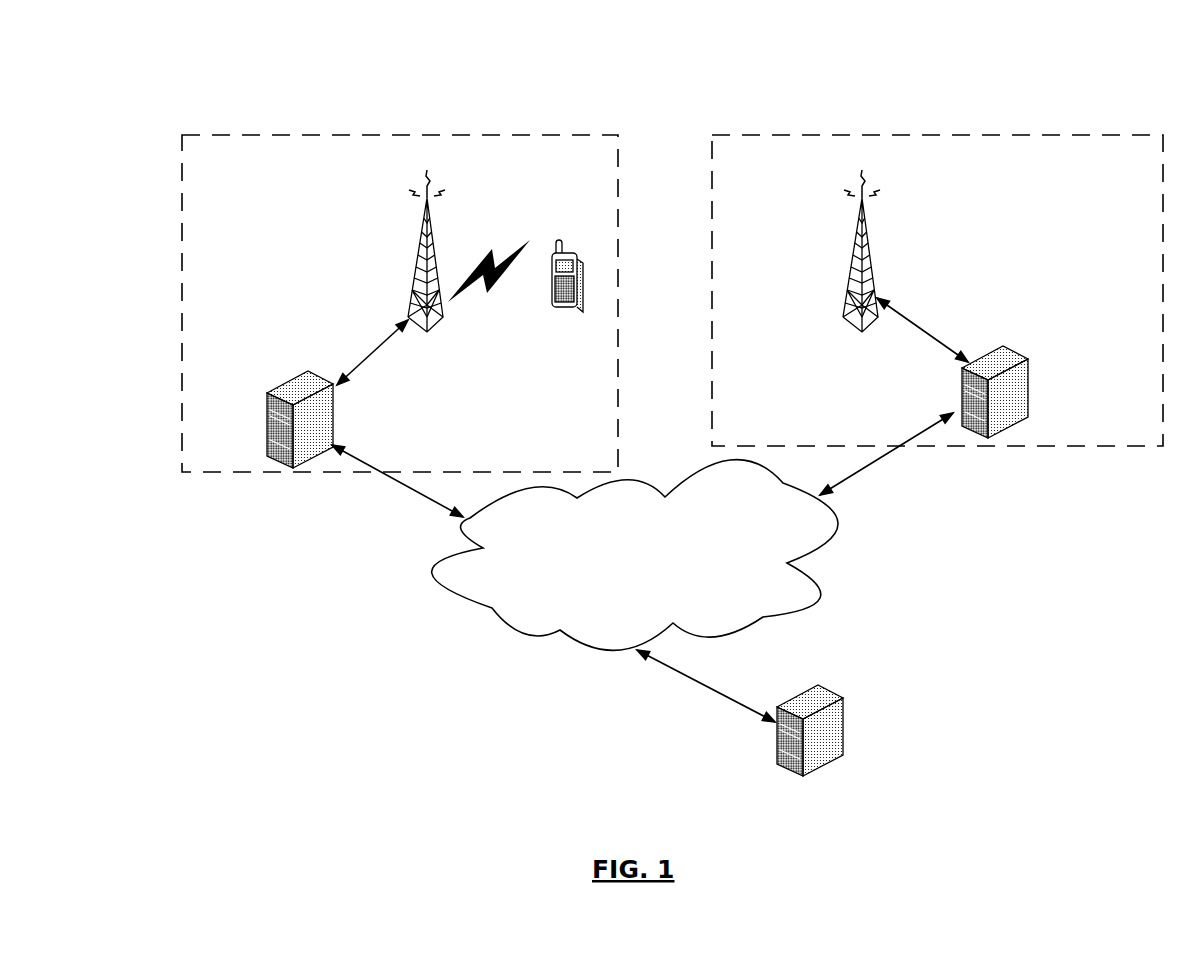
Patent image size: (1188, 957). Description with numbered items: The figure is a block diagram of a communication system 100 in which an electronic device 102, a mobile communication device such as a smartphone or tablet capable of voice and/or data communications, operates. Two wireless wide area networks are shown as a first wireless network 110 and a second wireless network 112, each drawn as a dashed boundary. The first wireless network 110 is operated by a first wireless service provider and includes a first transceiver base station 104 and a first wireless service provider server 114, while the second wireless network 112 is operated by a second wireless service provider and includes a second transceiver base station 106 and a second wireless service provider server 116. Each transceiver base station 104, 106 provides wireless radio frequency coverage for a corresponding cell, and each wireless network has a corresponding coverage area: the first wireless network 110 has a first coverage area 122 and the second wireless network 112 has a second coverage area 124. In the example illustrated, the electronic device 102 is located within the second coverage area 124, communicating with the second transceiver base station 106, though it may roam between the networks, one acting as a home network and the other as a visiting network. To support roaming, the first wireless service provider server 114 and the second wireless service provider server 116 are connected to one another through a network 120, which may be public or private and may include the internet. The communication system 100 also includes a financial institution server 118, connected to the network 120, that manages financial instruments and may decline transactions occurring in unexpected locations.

The communication system 100 is at (330, 82).
The electronic device 102 is at (577, 252).
The first transceiver base station 104 is at (873, 275).
The second transceiver base station 106 is at (417, 257).
The first wireless network 110 is at (937, 290).
The second wireless network 112 is at (400, 303).
The first wireless service provider server 114 is at (1028, 362).
The second wireless service provider server 116 is at (285, 380).
The financial institution server 118 is at (845, 695).
The network 120 is at (635, 555).
The first coverage area 122 is at (1072, 446).
The second coverage area 124 is at (242, 473).